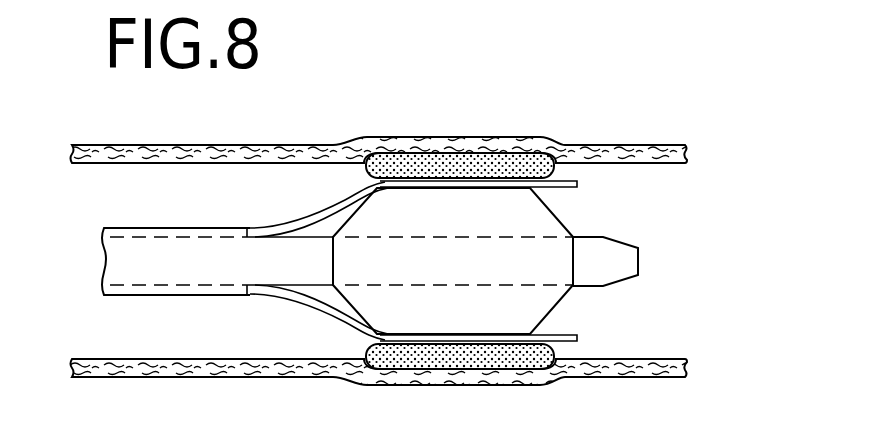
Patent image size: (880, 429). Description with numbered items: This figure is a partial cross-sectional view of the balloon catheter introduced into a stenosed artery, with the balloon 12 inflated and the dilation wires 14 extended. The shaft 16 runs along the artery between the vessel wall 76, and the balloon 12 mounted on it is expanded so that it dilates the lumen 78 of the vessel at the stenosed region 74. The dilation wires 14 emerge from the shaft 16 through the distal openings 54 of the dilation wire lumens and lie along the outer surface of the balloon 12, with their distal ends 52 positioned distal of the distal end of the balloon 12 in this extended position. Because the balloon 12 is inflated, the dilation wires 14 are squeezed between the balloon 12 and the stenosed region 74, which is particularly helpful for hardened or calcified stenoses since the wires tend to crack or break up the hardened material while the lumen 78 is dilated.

The balloon 12 is at (560, 212).
The dilation wires 14 is at (353, 184).
The shaft 16 is at (165, 216).
The distal ends of the dilation wires 52 is at (586, 182).
The distal openings of the dilation wire lumens 54 is at (245, 216).
The stenosed region 74 is at (367, 127).
The vessel wall 76 is at (303, 203).
The lumen of the vessel 78 is at (604, 313).